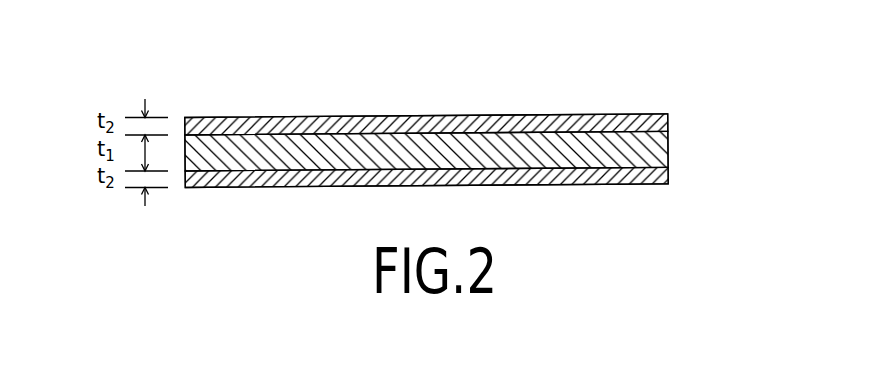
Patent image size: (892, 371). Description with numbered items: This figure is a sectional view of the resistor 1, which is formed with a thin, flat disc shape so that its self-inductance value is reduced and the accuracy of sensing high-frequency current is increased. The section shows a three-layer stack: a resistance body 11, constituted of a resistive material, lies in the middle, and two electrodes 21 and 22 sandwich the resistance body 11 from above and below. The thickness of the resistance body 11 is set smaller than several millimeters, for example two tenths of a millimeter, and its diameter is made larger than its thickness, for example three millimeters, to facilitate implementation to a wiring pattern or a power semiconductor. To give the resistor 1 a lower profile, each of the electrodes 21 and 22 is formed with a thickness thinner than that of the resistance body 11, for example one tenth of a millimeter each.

The resistor 1 is at (616, 79).
The resistance body 11 is at (667, 150).
The electrode 21 is at (659, 123).
The electrode 22 is at (655, 177).